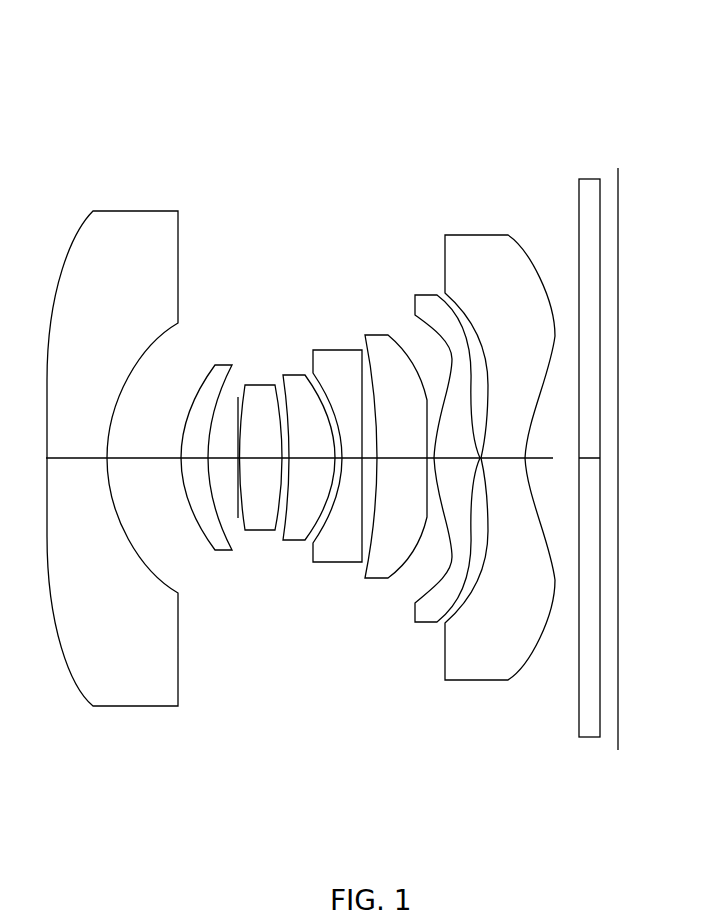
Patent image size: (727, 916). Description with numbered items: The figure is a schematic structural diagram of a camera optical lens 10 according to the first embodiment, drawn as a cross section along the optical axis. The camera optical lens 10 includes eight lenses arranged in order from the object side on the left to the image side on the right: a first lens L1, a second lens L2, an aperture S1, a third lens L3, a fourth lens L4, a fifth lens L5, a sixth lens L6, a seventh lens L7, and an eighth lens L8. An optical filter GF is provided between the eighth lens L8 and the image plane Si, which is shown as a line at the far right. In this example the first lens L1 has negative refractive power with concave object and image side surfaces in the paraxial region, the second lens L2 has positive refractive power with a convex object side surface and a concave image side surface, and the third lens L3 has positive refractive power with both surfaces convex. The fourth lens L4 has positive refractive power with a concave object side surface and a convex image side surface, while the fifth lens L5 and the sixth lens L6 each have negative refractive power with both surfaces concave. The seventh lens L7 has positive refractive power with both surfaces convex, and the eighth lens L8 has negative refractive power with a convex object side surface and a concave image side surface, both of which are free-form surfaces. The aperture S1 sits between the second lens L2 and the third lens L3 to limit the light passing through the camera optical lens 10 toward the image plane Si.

The camera optical lens 10 is at (354, 76).
The first lens L1 is at (112, 429).
The second lens L2 is at (208, 445).
The third lens L3 is at (261, 442).
The fourth lens L4 is at (309, 440).
The fifth lens L5 is at (337, 436).
The sixth lens L6 is at (392, 437).
The seventh lens L7 is at (447, 442).
The eighth lens L8 is at (500, 440).
The aperture S1 is at (240, 444).
The optical filter GF is at (586, 442).
The image plane Si is at (613, 442).